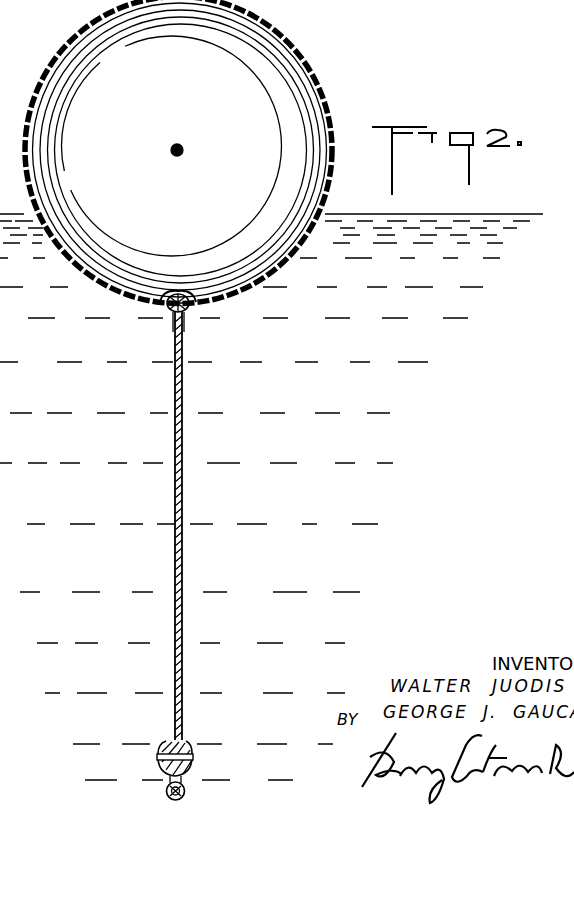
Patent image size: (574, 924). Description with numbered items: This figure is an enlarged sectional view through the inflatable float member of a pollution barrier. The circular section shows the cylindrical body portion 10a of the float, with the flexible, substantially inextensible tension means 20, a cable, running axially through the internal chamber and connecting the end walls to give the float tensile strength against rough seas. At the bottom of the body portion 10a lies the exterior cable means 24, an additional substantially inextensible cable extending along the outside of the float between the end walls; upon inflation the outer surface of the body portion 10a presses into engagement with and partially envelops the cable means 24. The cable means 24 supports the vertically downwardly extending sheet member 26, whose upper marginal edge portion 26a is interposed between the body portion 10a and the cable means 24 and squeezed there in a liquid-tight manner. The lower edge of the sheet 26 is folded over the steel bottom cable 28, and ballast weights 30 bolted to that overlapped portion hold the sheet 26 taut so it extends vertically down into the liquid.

The body portion 10a is at (271, 23).
The tension means 20 is at (183, 146).
The cable means 24 is at (168, 311).
The upper marginal edge portion 26a is at (188, 311).
The sheet member 26 is at (184, 510).
The ballast weights 30 is at (163, 748).
The bottom cable 28 is at (184, 788).